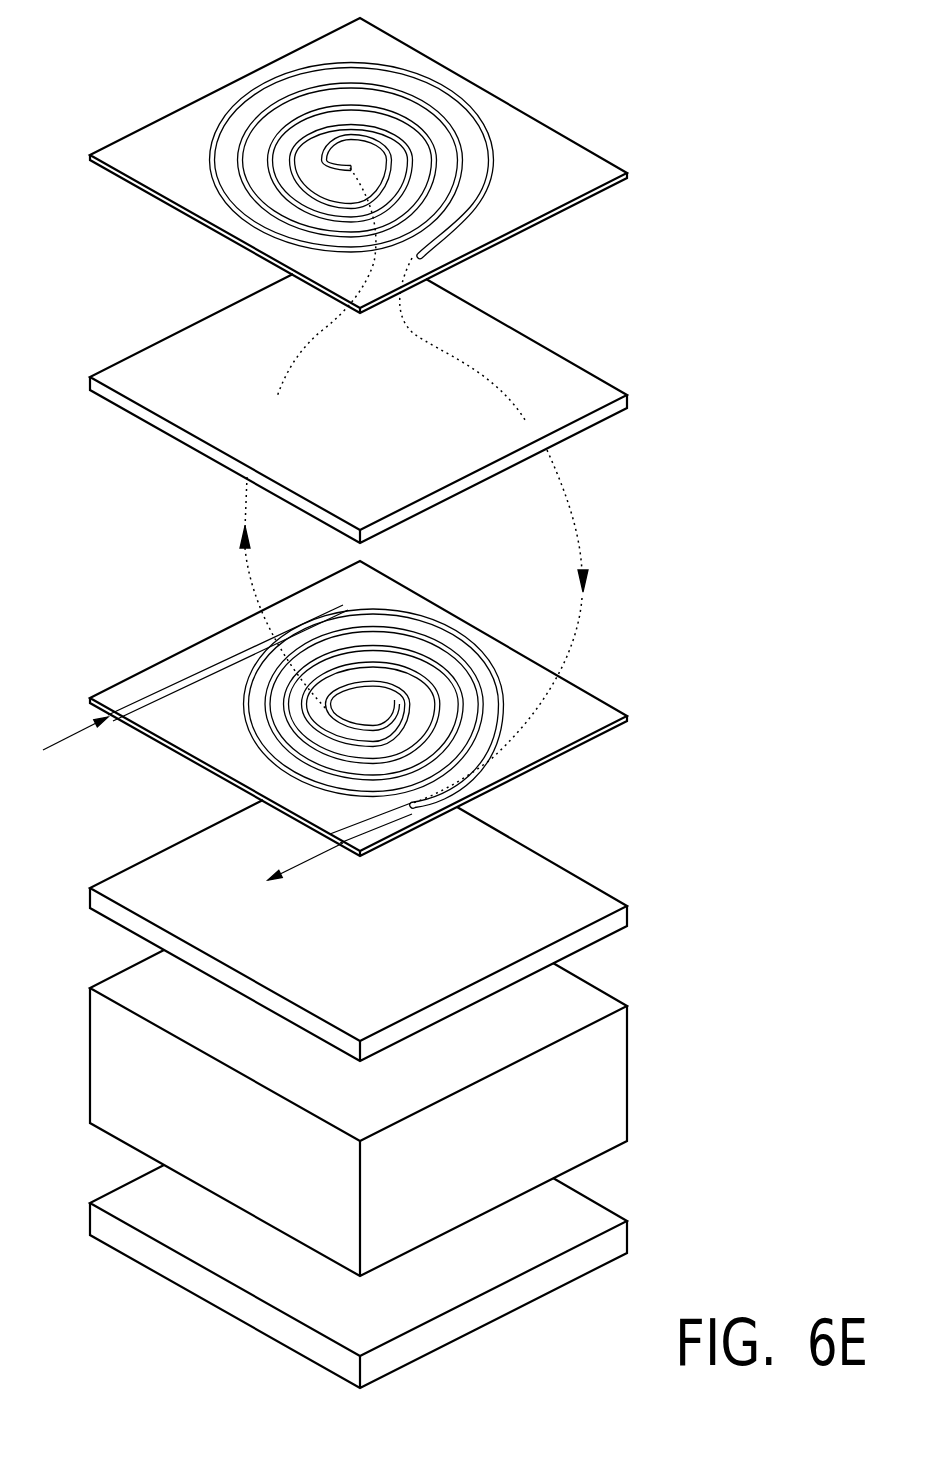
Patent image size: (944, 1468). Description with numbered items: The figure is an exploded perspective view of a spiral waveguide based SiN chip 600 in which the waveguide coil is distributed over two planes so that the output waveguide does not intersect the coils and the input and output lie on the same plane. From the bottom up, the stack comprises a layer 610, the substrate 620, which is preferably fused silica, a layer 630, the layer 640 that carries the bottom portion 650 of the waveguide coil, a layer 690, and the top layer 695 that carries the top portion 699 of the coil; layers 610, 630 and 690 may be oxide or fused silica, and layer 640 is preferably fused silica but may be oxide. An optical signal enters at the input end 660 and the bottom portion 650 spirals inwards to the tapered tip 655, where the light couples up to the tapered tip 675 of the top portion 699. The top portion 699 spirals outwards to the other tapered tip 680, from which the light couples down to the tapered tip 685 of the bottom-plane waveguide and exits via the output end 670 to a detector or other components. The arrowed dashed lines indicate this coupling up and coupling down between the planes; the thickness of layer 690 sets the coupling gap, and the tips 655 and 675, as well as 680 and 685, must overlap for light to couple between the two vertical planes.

The spiral waveguide based SiN chip 600 is at (419, 698).
The layer 610 is at (113, 1188).
The substrate 620 is at (113, 973).
The layer 630 is at (113, 873).
The layer 640 is at (115, 685).
The bottom portion of waveguide coil 650 is at (331, 742).
The tapered tip 655 is at (372, 690).
The input end 660 is at (73, 737).
The output end 670 is at (310, 862).
The tapered tip 675 is at (350, 165).
The tapered tip 680 is at (421, 257).
The tapered tip 685 is at (414, 804).
The layer 690 is at (113, 362).
The top layer 695 is at (112, 145).
The top portion of waveguide coil 699 is at (370, 161).